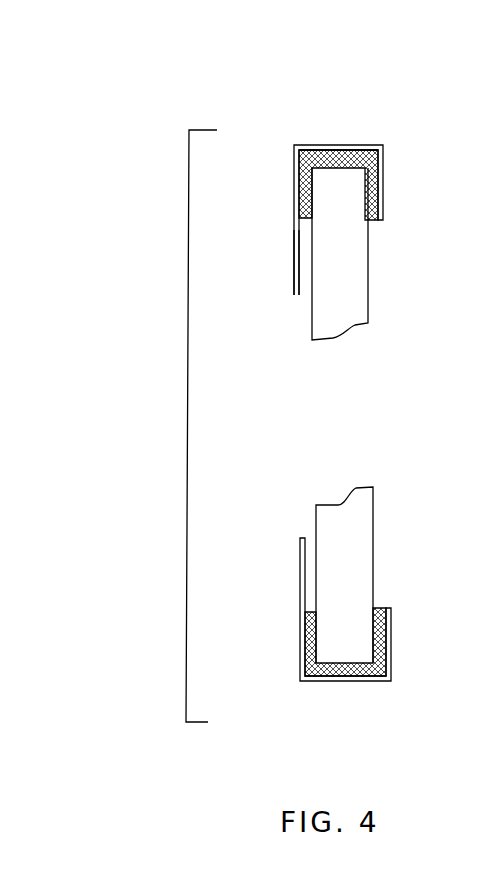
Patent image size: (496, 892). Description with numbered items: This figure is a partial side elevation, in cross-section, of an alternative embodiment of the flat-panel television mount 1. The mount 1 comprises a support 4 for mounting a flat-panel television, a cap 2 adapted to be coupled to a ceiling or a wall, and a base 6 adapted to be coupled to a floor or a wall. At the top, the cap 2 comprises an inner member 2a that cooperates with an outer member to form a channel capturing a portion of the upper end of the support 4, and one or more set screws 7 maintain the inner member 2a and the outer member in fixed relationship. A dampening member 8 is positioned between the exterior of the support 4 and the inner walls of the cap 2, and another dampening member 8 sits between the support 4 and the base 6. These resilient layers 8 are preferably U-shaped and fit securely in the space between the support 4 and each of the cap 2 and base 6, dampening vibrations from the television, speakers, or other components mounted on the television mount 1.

The flat-panel television mount 1 is at (162, 426).
The cap 2 is at (383, 157).
The inner member 2a is at (296, 257).
The support 4 is at (355, 290).
The base 6 is at (392, 652).
The set screw 7 is at (340, 147).
The dampening member 8 is at (300, 181).